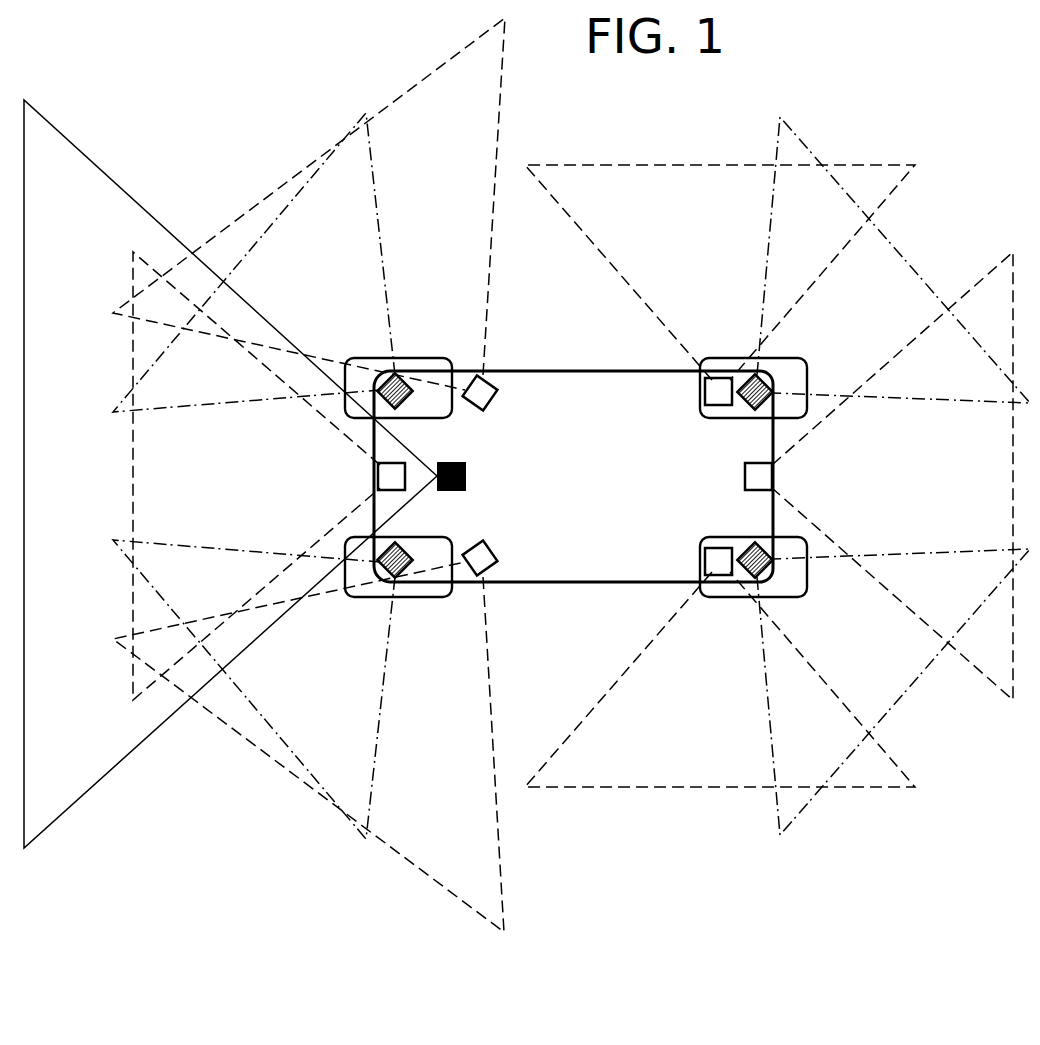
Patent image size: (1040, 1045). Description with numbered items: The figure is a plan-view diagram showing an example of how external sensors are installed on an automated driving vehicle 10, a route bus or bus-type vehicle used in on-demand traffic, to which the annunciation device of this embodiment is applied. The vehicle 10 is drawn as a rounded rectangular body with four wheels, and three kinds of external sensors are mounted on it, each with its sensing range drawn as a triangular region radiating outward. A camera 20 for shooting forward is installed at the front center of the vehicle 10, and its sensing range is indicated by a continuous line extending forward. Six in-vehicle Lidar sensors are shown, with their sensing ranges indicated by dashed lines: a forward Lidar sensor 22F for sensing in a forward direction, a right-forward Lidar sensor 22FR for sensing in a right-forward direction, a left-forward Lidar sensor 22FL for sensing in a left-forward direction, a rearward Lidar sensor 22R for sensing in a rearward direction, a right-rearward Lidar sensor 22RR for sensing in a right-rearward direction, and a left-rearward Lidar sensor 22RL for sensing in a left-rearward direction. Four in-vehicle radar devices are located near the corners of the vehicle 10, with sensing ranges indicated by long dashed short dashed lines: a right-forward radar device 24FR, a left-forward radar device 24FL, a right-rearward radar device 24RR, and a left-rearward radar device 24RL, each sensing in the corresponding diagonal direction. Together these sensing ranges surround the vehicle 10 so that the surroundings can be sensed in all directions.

The automated driving vehicle 10 is at (580, 371).
The camera 20 is at (442, 463).
The forward Lidar sensor 22F is at (378, 463).
The rearward Lidar sensor 22R is at (773, 467).
The right-forward Lidar sensor 22FR is at (492, 378).
The left-forward Lidar sensor 22FL is at (485, 577).
The right-rearward Lidar sensor 22RR is at (705, 390).
The left-rearward Lidar sensor 22RL is at (705, 572).
The right-forward radar device 24FR is at (413, 372).
The left-forward radar device 24FL is at (400, 578).
The right-rearward radar device 24RR is at (753, 374).
The left-rearward radar device 24RL is at (751, 578).